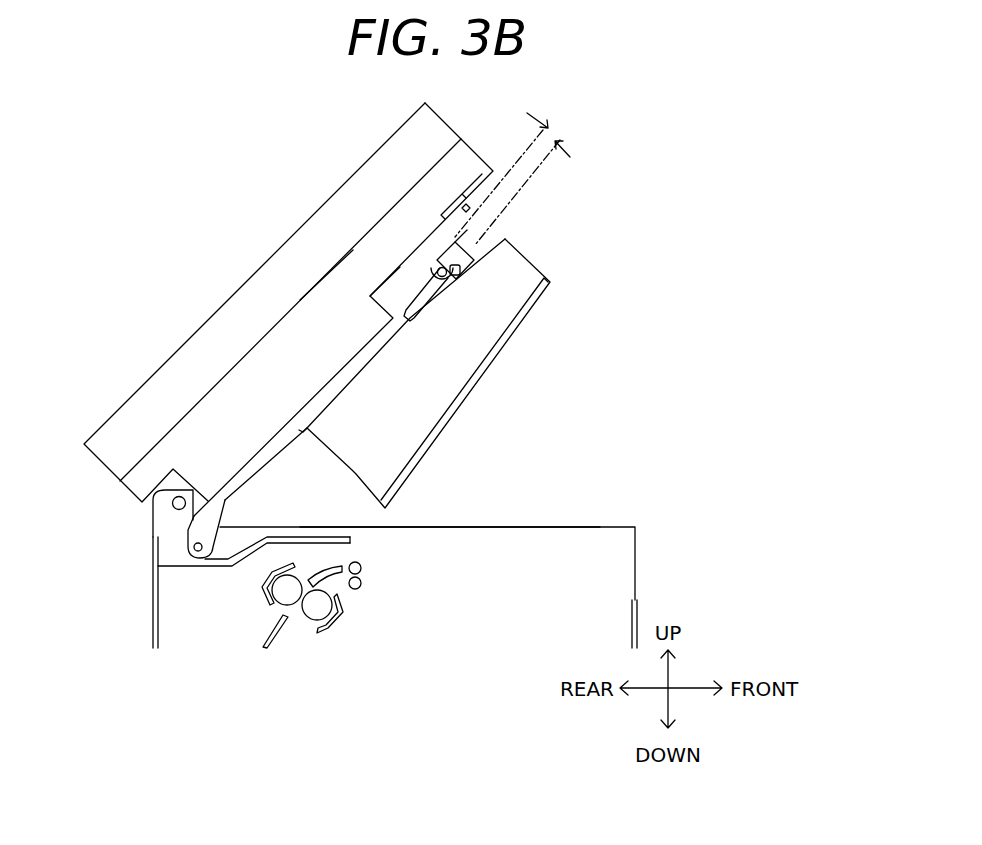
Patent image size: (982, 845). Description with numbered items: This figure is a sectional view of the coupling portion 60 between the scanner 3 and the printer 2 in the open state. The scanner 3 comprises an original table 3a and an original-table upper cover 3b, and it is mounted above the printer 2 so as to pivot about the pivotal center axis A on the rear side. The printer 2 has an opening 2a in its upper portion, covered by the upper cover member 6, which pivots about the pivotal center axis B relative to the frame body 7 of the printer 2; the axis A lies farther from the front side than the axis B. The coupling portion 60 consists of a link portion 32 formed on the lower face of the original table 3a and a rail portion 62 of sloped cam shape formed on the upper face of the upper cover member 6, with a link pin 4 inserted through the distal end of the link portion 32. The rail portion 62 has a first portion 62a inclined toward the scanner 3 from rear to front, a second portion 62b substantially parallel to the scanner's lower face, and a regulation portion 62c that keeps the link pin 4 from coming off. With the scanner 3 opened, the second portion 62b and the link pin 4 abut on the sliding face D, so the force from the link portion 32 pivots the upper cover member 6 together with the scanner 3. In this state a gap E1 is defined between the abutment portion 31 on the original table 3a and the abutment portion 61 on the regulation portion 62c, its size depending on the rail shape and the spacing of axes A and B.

The scanner 3 is at (190, 292).
The original table 3a is at (281, 368).
The original-table upper cover 3b is at (175, 373).
The abutment portion 31 is at (463, 199).
The link portion 32 is at (424, 260).
The abutment portion 61 is at (438, 243).
The second portion 62b is at (440, 258).
The regulation portion 62c is at (472, 272).
The coupling portion 60 is at (478, 245).
The gap E1 is at (526, 179).
The face D is at (432, 274).
The first portion 62a is at (412, 322).
The rail portion 62 is at (458, 297).
The link pin 4 is at (448, 258).
The upper cover member 6 is at (430, 450).
The printer 2 is at (251, 676).
The opening 2a is at (503, 522).
The frame body 7 is at (200, 566).
The pivotal center axis A is at (173, 504).
The pivotal center axis B is at (193, 547).